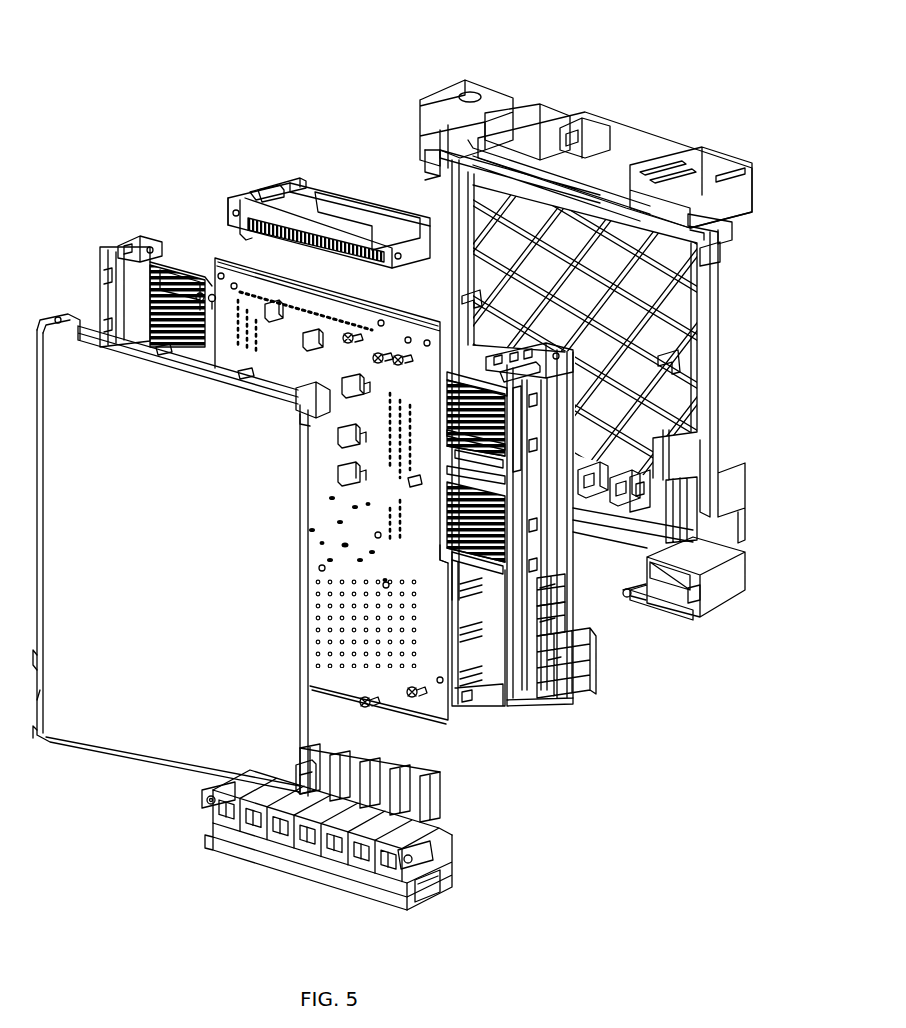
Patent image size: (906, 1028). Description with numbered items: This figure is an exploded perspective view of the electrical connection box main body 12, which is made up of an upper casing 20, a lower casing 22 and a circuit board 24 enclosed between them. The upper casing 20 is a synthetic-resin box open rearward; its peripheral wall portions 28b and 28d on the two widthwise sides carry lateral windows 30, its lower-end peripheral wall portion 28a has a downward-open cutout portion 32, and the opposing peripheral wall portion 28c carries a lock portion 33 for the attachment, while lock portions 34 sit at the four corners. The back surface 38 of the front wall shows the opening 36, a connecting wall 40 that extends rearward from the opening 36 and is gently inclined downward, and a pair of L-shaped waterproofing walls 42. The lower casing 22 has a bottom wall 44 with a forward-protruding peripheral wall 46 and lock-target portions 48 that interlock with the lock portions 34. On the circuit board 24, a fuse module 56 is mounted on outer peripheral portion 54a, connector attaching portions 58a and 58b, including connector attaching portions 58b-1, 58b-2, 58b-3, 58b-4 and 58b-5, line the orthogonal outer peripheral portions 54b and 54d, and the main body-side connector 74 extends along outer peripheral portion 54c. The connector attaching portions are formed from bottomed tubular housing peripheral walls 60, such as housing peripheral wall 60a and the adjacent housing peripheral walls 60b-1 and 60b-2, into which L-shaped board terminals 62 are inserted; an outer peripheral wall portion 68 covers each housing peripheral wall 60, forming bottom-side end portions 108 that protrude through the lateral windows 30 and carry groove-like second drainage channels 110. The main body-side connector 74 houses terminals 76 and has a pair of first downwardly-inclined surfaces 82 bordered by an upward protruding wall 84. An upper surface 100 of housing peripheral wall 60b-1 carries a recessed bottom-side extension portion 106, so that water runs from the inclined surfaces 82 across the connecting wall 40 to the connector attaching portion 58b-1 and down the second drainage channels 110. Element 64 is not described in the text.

The electrical connection box main body 12 is at (284, 52).
The lower casing 22 is at (45, 298).
The circuit board 24 is at (204, 248).
The upper casing 20 is at (411, 94).
The bottom wall 44 is at (135, 728).
The outer peripheral portion 54b is at (218, 358).
The connector attaching portion 58a is at (104, 240).
The housing peripheral wall 60a is at (112, 298).
The peripheral wall 46 is at (300, 380).
The outer peripheral portion 54c is at (318, 292).
The outer peripheral portion 54a is at (338, 748).
The outer peripheral portion 54d is at (430, 548).
The main body-side connector 74 is at (311, 164).
The first downwardly-inclined surface 82 is at (366, 222).
The protruding wall 84 is at (278, 185).
The terminals 76 is at (300, 233).
The outer peripheral wall portion 68 is at (533, 403).
The bottom-side end portion 108 is at (548, 442).
The housing peripheral wall 60b-1 is at (480, 470).
The housing peripheral wall 60b-2 is at (480, 505).
The second drainage channel 110 is at (522, 420).
The bottom-side extension portion 106 is at (509, 428).
The fuse module 56 is at (325, 916).
The peripheral wall portion 28b is at (448, 380).
The opening 36 is at (517, 186).
The peripheral wall portion 28c is at (612, 168).
The lock portion 33 is at (565, 132).
The connecting wall 40 is at (655, 205).
The back surface 38 is at (655, 305).
The peripheral wall portion 28d is at (728, 496).
The connector attaching portion 58b is at (582, 372).
The connector attaching portion 58b-1 is at (570, 402).
The support rail 64 is at (596, 430).
The connector attaching portion 58b-2 is at (702, 548).
The connector attaching portion 58b-3 is at (527, 600).
The connector attaching portion 58b-4 is at (545, 626).
The connector attaching portion 58b-5 is at (585, 692).
The peripheral wall portion 28a is at (600, 550).
The cutout portion 32 is at (622, 592).
The upper surface 100 is at (142, 226).
The lock-target portion 48 is at (312, 414).
The board terminal 62 is at (178, 330).
The lateral window 30 is at (440, 162).
The lock portion 34 is at (692, 236).
The waterproofing wall 42 is at (466, 297).
The housing peripheral wall 60 is at (548, 592).